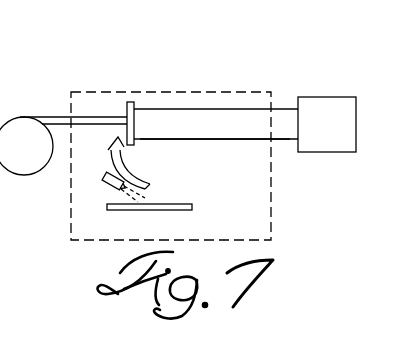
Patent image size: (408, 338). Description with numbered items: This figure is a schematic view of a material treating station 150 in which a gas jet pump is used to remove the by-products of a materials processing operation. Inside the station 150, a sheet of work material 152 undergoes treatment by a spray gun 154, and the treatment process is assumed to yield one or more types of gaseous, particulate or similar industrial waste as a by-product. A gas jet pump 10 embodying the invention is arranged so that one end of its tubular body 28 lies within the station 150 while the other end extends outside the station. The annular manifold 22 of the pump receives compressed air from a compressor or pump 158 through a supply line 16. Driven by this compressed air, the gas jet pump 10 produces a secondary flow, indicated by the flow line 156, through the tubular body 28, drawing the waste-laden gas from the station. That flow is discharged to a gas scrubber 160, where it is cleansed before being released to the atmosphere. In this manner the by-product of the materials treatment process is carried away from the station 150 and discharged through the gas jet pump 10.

The gas jet pump 10 is at (227, 109).
The supply line 16 is at (53, 117).
The annular manifold 22 is at (127, 102).
The tubular body 28 is at (204, 140).
The material treating station 150 is at (170, 92).
The sheet of work material 152 is at (192, 207).
The spray gun 154 is at (104, 178).
The flow line 156 is at (121, 158).
The compressor or pump 158 is at (20, 171).
The gas scrubber 160 is at (310, 100).